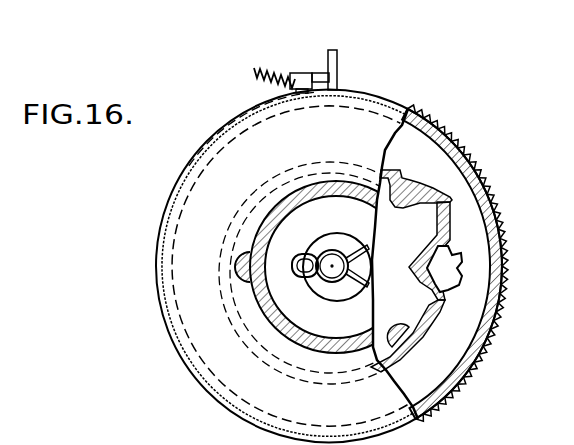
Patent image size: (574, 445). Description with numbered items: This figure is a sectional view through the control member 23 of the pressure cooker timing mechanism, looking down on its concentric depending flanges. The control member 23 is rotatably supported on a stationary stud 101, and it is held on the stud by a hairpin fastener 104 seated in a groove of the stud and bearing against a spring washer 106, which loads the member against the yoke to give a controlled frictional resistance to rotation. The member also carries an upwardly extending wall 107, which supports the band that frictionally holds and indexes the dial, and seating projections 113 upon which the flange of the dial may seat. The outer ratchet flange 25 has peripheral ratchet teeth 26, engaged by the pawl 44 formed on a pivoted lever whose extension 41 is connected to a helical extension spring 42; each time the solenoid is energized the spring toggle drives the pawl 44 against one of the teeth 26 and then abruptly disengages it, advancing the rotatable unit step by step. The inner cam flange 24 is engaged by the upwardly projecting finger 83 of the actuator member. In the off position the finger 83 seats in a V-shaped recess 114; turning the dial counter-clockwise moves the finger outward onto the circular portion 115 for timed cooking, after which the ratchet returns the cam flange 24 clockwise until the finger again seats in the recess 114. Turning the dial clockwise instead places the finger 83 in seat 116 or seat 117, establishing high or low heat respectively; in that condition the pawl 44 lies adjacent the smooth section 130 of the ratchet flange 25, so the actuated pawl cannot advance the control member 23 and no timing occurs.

The control member 23 is at (166, 320).
The cam flange 24 is at (440, 314).
The ratchet flange 25 is at (445, 400).
The ratchet teeth 26 is at (497, 300).
The extension 41 is at (300, 80).
The helical extension spring 42 is at (262, 65).
The pawl 44 is at (330, 52).
The finger 83 is at (448, 263).
The stud 101 is at (333, 262).
The hairpin fastener 104 is at (300, 282).
The spring washer 106 is at (341, 291).
The upwardly extending wall 107 is at (290, 207).
The seating projections 113 is at (235, 266).
The V-shaped recess 114 is at (430, 285).
The circular portion 115 is at (433, 333).
The seat 116 is at (446, 233).
The seat 117 is at (452, 193).
The smooth section 130 is at (237, 122).